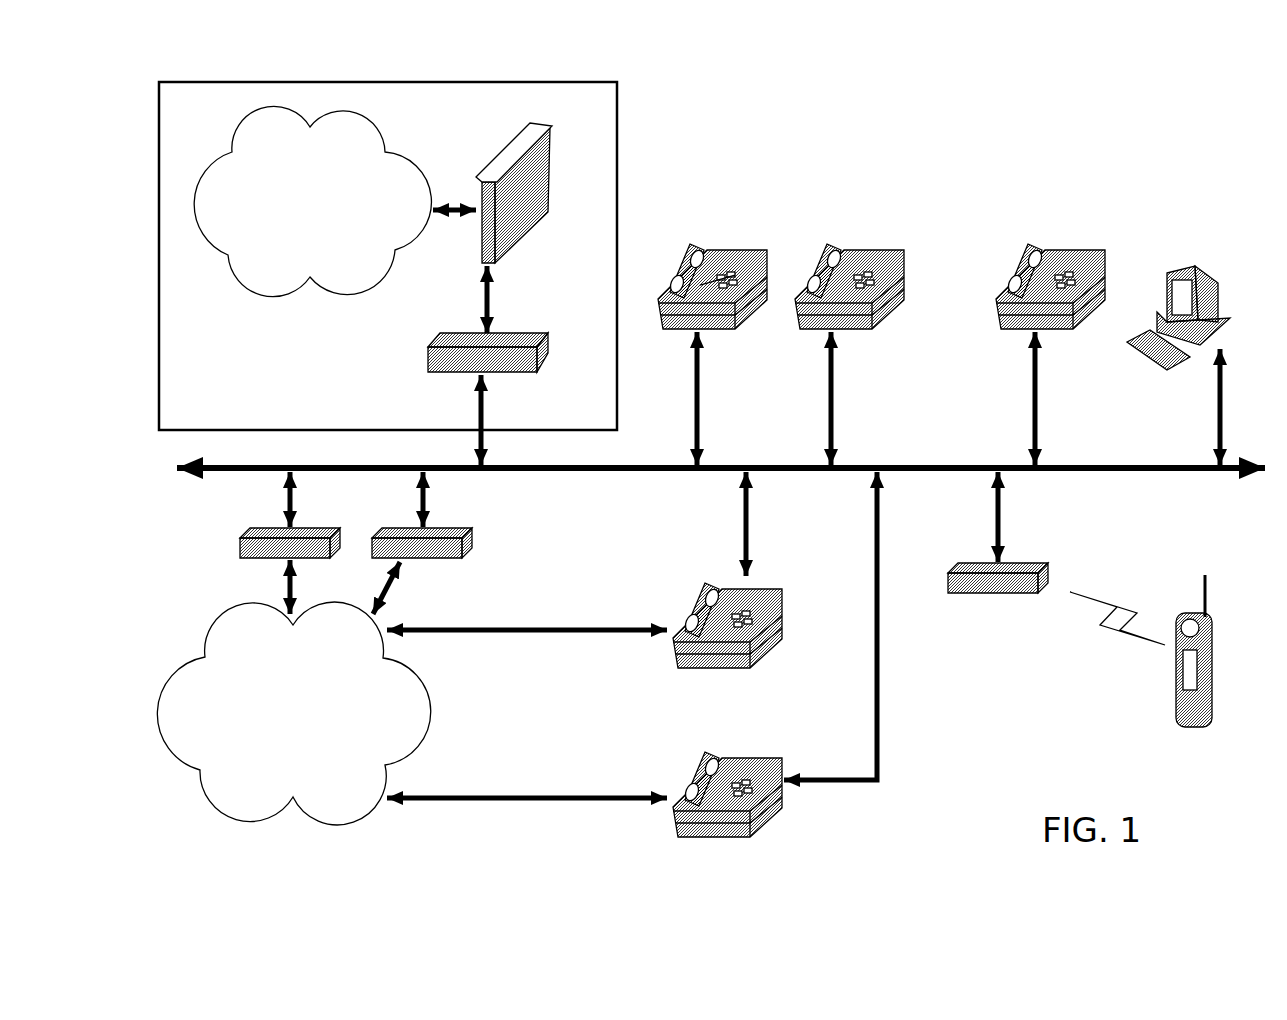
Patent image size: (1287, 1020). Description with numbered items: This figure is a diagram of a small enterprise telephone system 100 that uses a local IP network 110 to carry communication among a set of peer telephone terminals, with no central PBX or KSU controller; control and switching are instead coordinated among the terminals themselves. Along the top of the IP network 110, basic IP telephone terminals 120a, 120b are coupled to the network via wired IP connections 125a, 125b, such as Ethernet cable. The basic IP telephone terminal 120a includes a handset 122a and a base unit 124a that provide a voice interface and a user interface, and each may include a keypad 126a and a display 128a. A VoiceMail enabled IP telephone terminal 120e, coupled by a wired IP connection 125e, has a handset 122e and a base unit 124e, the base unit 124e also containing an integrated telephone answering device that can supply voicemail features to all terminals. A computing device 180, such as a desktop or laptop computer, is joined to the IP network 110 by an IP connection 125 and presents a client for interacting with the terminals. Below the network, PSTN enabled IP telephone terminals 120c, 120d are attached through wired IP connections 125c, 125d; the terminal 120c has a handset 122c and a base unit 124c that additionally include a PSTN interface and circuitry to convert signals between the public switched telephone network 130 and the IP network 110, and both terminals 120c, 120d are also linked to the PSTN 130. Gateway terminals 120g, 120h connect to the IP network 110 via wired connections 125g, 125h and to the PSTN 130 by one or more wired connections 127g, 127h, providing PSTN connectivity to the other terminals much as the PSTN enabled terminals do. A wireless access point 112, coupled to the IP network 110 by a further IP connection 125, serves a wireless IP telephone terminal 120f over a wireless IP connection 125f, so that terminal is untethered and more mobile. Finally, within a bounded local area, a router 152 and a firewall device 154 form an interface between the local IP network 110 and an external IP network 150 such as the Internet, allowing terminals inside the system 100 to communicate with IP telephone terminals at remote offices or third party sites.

The telephone system 100 is at (1215, 62).
The IP network 110 is at (1113, 466).
The wireless access point 112 is at (1005, 573).
The basic IP telephone terminal 120a is at (719, 246).
The basic IP telephone terminal 120b is at (852, 235).
The PSTN enabled IP telephone terminal 120c is at (727, 620).
The PSTN enabled IP telephone terminal 120d is at (749, 795).
The VoiceMail enabled IP telephone terminal 120e is at (1044, 235).
The wireless IP telephone terminal 120f is at (1161, 632).
The gateway terminal 120g is at (440, 518).
The gateway terminal 120h is at (300, 518).
The handset 122a is at (674, 263).
The handset 122c is at (686, 603).
The handset 122e is at (1014, 263).
The base unit 124a is at (663, 330).
The base unit 124c is at (678, 662).
The base unit 124e is at (993, 312).
The IP connection 125 is at (1082, 455).
The wired IP connection 125a is at (671, 398).
The wired IP connection 125b is at (803, 398).
The wired IP connection 125c is at (716, 524).
The wired IP connection 125d is at (830, 626).
The wired IP connection 125e is at (1005, 398).
The wireless IP connection 125f is at (1117, 610).
The wired connection 125g is at (395, 499).
The wired connection 125h is at (263, 499).
The keypad 126a is at (727, 300).
The wired connection 127g is at (366, 588).
The wired connection 127h is at (262, 587).
The display 128a is at (742, 262).
The PSTN 130 is at (306, 773).
The external IP network 150 is at (329, 253).
The router 152 is at (512, 332).
The firewall device 154 is at (548, 163).
The computing device 180 is at (1183, 295).